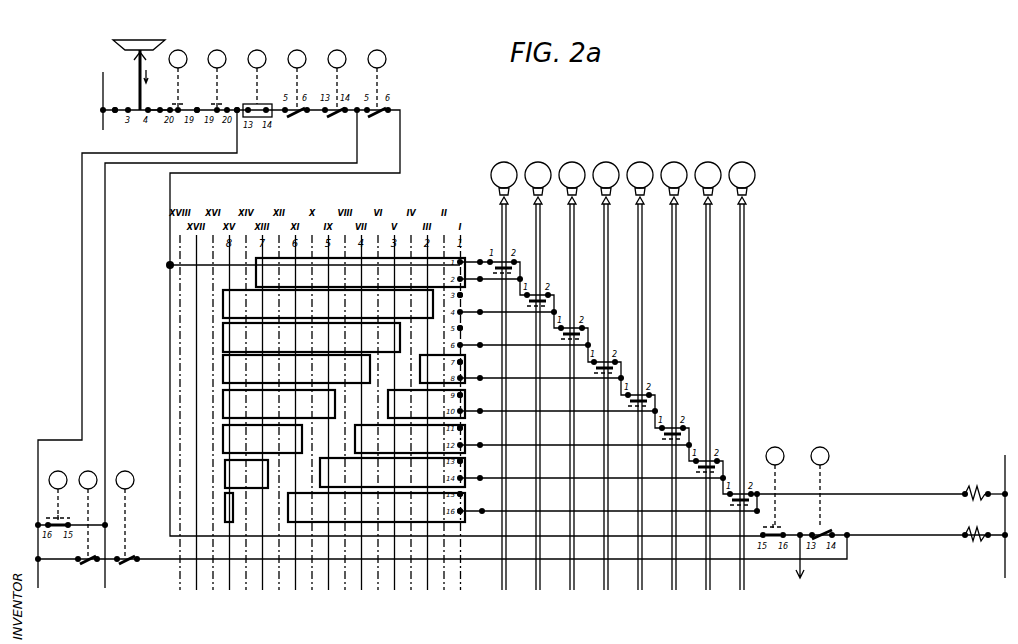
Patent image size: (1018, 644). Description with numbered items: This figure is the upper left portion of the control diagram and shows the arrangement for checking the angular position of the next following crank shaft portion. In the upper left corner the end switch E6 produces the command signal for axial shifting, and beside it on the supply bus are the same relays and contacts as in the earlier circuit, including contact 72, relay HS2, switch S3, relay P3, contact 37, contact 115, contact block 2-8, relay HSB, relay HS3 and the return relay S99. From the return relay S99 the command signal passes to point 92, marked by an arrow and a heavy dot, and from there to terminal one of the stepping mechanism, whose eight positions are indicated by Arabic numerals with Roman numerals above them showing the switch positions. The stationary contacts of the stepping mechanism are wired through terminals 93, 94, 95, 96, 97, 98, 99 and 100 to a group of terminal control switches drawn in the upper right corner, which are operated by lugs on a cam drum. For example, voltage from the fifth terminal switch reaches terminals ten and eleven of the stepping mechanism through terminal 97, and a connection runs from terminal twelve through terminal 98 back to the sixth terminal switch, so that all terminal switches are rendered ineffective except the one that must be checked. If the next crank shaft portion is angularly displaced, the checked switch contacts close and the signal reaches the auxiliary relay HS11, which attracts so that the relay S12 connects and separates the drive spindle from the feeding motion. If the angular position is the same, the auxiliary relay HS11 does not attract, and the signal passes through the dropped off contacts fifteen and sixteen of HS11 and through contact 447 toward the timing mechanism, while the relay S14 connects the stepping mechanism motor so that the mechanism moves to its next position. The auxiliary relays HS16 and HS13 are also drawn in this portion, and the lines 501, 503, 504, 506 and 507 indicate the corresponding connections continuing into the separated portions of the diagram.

The line 501 is at (103, 84).
The contact 72 is at (115, 107).
The end switch E6 is at (136, 62).
The contact 37 is at (197, 107).
The contact 115 is at (237, 107).
The contact block 2-8 is at (258, 104).
The auxiliary contactor HS2 is at (178, 50).
The switch S3 is at (217, 50).
The relay P3 is at (257, 50).
The relay HSB is at (297, 50).
The relay HS3 is at (337, 50).
The return relay S99 is at (377, 50).
The point 92 is at (152, 243).
The terminal 93 is at (473, 296).
The terminal 94 is at (473, 330).
The terminal 95 is at (473, 363).
The terminal 96 is at (473, 396).
The terminal 97 is at (473, 429).
The terminal 98 is at (473, 463).
The terminal 99 is at (473, 496).
The terminal 100 is at (482, 513).
The auxiliary contactor HS16 is at (778, 443).
The auxiliary relay HS11 is at (822, 443).
The switch contact 447 is at (800, 530).
The line 507 is at (816, 559).
The line 506 is at (1005, 574).
The auxiliary contactor HS13 is at (49, 480).
The relay S14 is at (88, 471).
The relay S12 is at (125, 471).
The line 503 is at (38, 585).
The line 504 is at (105, 585).